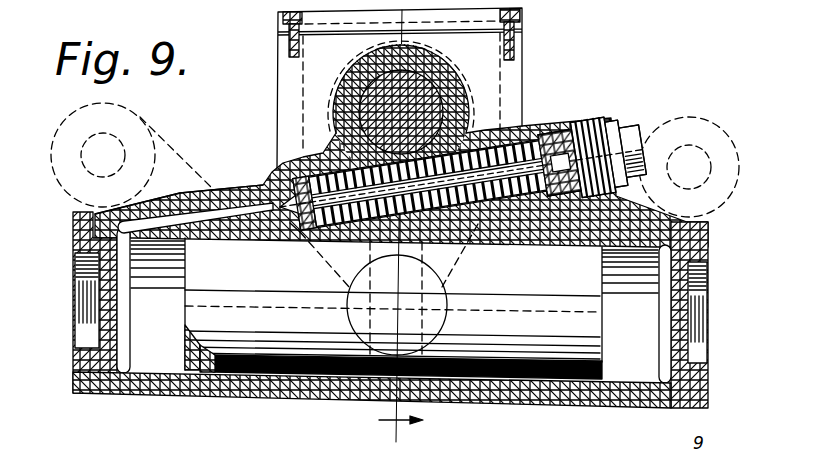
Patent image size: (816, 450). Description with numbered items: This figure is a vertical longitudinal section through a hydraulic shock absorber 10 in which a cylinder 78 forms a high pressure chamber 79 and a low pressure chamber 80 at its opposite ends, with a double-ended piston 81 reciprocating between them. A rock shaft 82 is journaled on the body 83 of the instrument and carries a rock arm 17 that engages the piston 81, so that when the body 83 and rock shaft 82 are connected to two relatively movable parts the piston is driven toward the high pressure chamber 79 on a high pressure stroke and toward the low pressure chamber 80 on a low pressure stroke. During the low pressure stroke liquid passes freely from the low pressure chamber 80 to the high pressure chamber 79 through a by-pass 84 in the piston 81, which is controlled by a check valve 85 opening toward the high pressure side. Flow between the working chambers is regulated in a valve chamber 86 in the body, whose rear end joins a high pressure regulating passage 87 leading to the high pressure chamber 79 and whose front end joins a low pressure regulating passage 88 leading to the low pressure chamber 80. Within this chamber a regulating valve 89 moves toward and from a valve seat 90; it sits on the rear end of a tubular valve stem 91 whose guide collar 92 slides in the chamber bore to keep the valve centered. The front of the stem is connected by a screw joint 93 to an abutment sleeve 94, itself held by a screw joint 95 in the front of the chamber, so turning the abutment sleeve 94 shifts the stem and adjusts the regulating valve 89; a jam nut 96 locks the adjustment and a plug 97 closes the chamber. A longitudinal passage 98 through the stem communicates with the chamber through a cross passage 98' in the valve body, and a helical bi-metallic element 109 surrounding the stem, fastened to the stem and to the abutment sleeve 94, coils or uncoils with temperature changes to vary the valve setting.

The valve casing 10 is at (522, 9).
The rock arm 17 is at (369, 322).
The cylinder 78 is at (352, 378).
The high pressure chamber 79 is at (147, 364).
The low pressure chamber 80 is at (631, 377).
The double-ended piston 81 is at (486, 365).
The rock shaft 82 is at (417, 84).
The body 83 is at (332, 87).
The by-pass 84 is at (218, 354).
The check valve 85 is at (197, 340).
The valve chamber 86 is at (486, 150).
The high pressure regulating passage 87 is at (163, 214).
The low pressure regulating passage 88 is at (655, 233).
The regulating valve 89 is at (290, 225).
The valve seat 90 is at (270, 185).
The tubular valve stem 91 is at (452, 236).
The guide collar 92 is at (325, 245).
The screw joint 93 is at (520, 238).
The abutment sleeve 94 is at (552, 133).
The screw joint 95 is at (572, 205).
The jam nut 96 is at (606, 121).
The plug 97 is at (625, 147).
The longitudinal passage 98 is at (444, 216).
The cross passage 98' is at (442, 178).
The bi-metallic element 109 is at (360, 233).